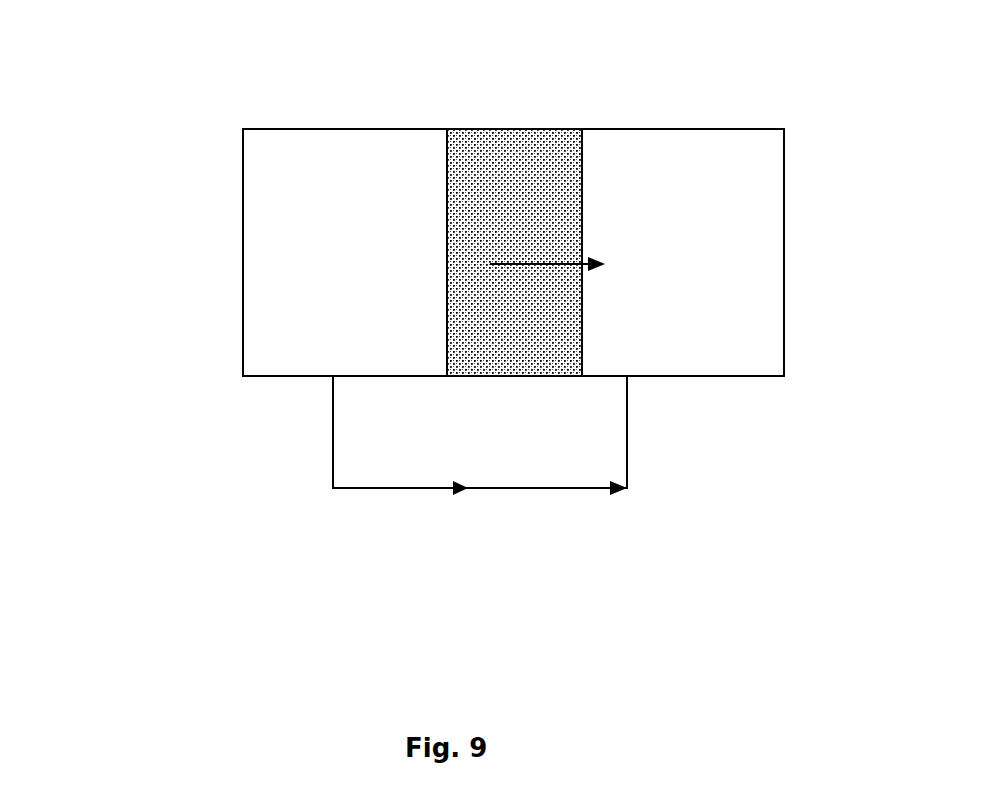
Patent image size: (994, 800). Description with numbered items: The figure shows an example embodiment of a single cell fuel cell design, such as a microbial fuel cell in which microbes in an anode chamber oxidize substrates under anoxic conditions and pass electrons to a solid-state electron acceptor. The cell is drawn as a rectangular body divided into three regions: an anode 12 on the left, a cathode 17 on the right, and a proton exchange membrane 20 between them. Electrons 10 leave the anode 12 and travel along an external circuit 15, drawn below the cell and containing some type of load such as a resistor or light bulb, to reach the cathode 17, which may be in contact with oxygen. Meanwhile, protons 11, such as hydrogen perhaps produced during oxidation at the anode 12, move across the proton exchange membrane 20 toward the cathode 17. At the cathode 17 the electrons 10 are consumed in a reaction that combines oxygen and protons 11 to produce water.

The electrons 10 is at (380, 443).
The protons 11 is at (352, 263).
The anode 12 is at (243, 242).
The external circuit 15 is at (627, 443).
The cathode 17 is at (695, 233).
The proton exchange membrane 20 is at (492, 197).